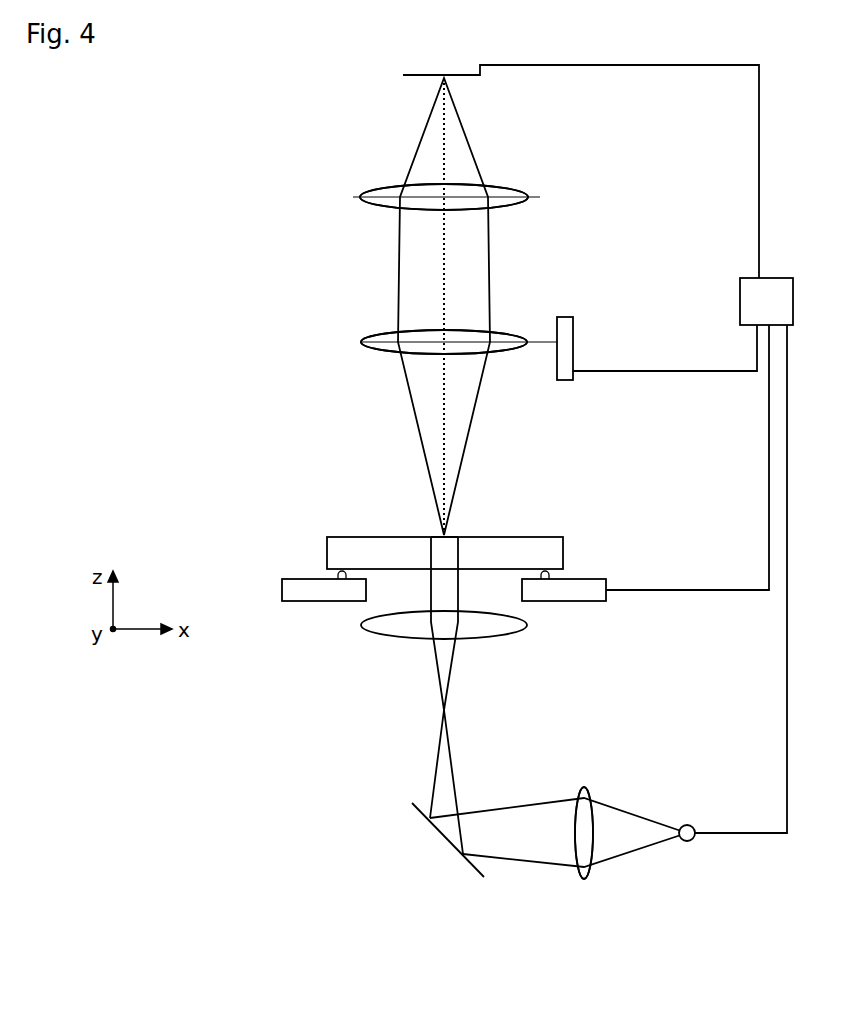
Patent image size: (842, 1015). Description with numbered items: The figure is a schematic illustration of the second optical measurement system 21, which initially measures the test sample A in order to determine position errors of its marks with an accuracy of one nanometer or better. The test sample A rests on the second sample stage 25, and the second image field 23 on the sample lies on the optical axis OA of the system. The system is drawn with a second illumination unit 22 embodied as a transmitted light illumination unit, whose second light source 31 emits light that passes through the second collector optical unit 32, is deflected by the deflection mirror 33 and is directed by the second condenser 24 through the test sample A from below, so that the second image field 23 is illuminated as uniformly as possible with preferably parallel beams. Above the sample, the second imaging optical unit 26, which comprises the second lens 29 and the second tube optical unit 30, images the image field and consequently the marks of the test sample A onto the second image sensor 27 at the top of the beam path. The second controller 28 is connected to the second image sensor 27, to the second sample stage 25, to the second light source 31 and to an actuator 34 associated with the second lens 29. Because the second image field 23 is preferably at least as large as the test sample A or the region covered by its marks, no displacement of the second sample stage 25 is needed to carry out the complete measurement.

The second optical measurement system 21 is at (529, 184).
The second illumination unit 22 is at (573, 785).
The second image field 23 is at (452, 531).
The second condenser 24 is at (372, 637).
The second sample stage 25 is at (292, 601).
The second imaging optical unit 26 is at (380, 358).
The second image sensor 27 is at (412, 78).
The second controller 28 is at (740, 292).
The second lens 29 is at (362, 342).
The second tube optical unit 30 is at (360, 197).
The second light source 31 is at (690, 825).
The second collector optical unit 32 is at (585, 790).
The deflection mirror 33 is at (418, 815).
The actuator 34 is at (573, 337).
The test sample A is at (545, 537).
The optical axis OA is at (444, 272).